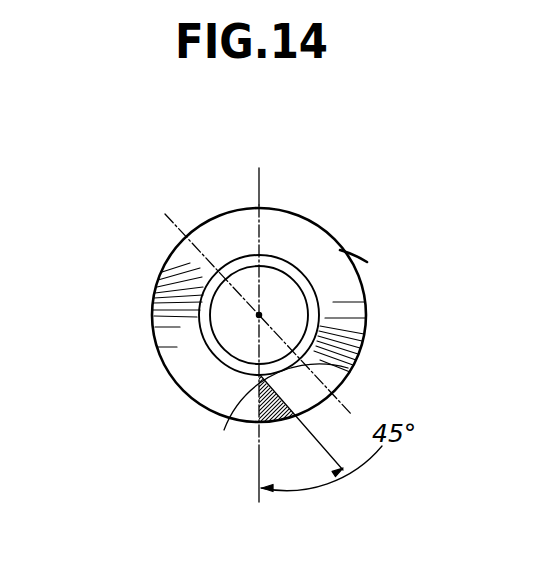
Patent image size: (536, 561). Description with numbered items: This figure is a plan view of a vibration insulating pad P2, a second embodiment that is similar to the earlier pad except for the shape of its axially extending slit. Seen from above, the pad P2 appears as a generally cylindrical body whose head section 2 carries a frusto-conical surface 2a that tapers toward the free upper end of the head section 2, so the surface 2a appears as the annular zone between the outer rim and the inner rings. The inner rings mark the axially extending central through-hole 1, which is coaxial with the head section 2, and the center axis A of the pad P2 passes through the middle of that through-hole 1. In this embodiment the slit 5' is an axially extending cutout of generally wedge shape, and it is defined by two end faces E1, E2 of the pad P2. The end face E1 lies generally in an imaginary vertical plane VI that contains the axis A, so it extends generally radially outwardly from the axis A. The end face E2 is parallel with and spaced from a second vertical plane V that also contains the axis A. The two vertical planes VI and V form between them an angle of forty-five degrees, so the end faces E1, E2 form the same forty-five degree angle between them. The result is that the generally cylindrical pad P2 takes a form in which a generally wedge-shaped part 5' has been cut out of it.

The axially extending central through-hole 1 is at (222, 346).
The head section 2 is at (333, 236).
The frusto-conical surface 2a is at (164, 266).
The slit 5' is at (275, 415).
The center axis A is at (259, 315).
The vibration insulating pad P2 is at (367, 261).
The end face E1 is at (224, 430).
The end face E2 is at (348, 368).
The vertical plane V is at (172, 222).
The vertical plane VI is at (258, 188).